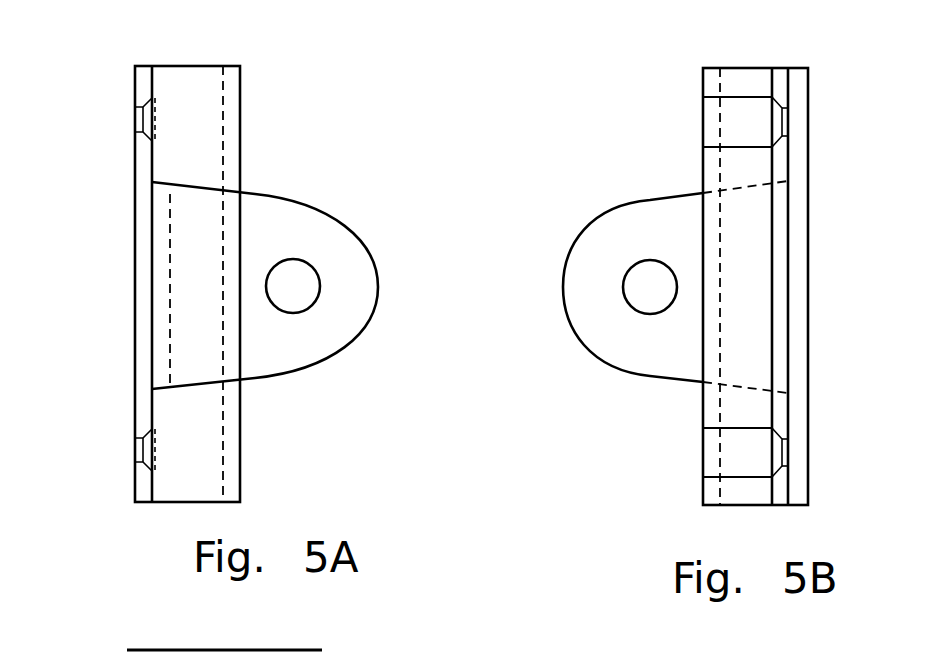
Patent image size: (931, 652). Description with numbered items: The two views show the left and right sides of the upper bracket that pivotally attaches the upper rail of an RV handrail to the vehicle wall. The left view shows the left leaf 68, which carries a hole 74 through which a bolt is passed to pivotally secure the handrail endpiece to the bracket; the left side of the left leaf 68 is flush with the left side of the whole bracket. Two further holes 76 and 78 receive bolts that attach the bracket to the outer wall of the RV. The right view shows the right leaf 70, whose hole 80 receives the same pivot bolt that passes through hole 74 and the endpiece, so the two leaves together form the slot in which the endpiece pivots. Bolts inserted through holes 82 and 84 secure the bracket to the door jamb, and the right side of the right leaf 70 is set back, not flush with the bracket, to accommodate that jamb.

In FIG. 5A, the left leaf 68 is at (310, 155).
In FIG. 5A, the hole 74 is at (320, 283).
In FIG. 5A, the hole 76 is at (135, 450).
In FIG. 5A, the hole 78 is at (133, 120).
In FIG. 5B, the right leaf 70 is at (603, 390).
In FIG. 5B, the hole 80 is at (623, 280).
In FIG. 5B, the hole 82 is at (703, 453).
In FIG. 5B, the hole 84 is at (703, 122).